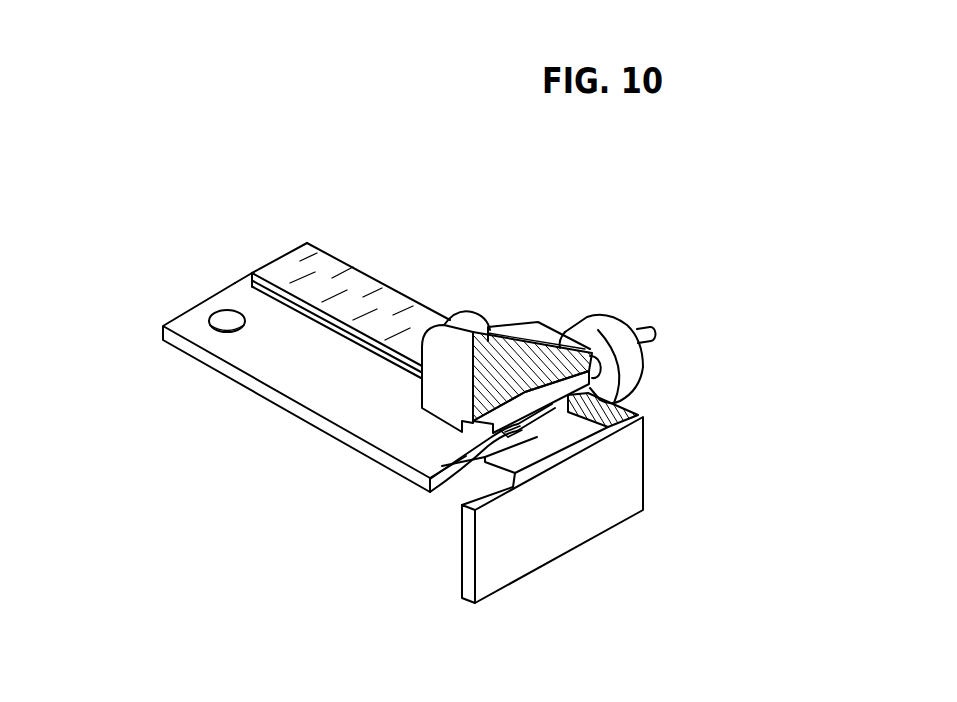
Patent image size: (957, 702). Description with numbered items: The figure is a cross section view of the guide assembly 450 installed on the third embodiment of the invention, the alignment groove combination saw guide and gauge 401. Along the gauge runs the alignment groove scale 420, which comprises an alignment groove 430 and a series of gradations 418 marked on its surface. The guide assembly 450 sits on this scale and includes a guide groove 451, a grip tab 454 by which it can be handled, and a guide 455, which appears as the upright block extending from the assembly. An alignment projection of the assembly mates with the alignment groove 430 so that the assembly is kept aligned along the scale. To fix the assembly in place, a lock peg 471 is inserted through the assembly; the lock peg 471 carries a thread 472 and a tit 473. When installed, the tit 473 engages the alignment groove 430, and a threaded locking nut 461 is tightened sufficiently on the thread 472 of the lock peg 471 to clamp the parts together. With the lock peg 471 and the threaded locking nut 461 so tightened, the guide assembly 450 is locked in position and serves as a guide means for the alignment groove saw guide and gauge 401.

The alignment groove combination saw guide and gauge 401 is at (242, 369).
The gradations 418 is at (338, 292).
The alignment groove 430 is at (400, 327).
The grip tab 454 is at (422, 370).
The guide assembly 450 is at (497, 325).
The guide groove 451 is at (438, 426).
The alignment groove scale 420 is at (421, 386).
The tit 473 is at (535, 437).
The guide 455 is at (515, 532).
The lock peg 471 is at (598, 393).
The threaded locking nut 461 is at (640, 363).
The thread 472 is at (641, 327).